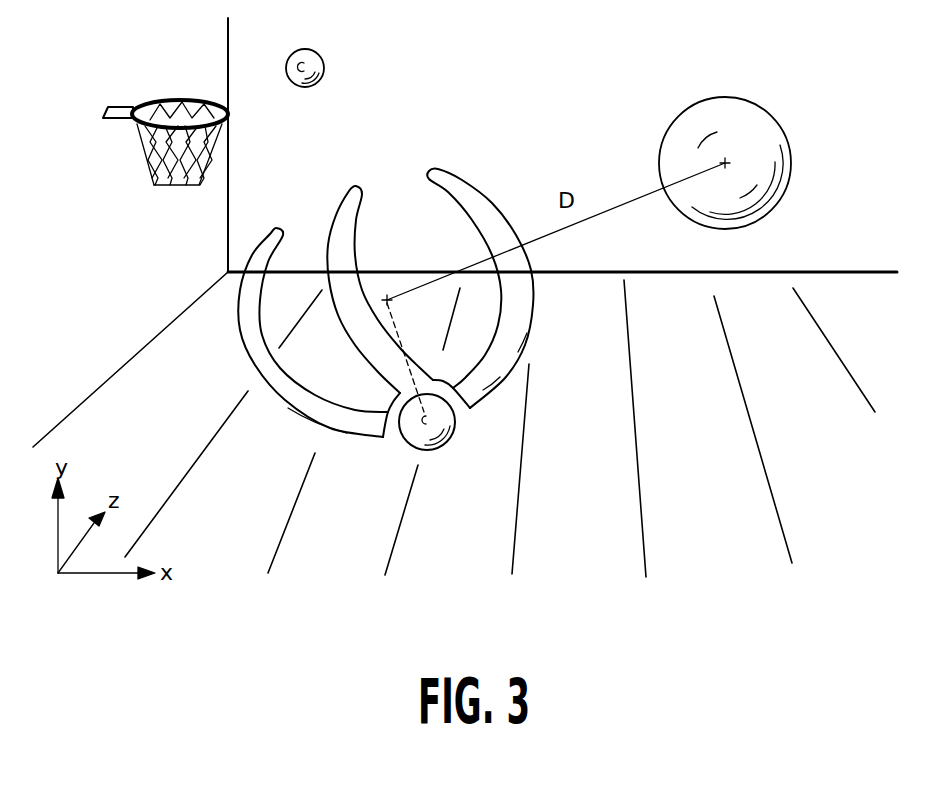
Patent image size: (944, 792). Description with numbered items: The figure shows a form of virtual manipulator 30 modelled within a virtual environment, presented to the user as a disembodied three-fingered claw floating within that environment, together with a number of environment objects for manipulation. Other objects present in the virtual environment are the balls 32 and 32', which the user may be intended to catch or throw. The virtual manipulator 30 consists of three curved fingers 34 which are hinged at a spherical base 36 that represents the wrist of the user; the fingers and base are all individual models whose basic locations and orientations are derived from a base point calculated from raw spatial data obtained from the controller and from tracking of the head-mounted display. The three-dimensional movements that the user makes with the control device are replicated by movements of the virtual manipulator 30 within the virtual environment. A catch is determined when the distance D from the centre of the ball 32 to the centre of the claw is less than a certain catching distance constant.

The virtual manipulator 30 is at (455, 139).
The ball 32 is at (760, 163).
The ball 32' is at (337, 62).
The curved finger 34 is at (358, 430).
The spherical base 36 is at (447, 445).